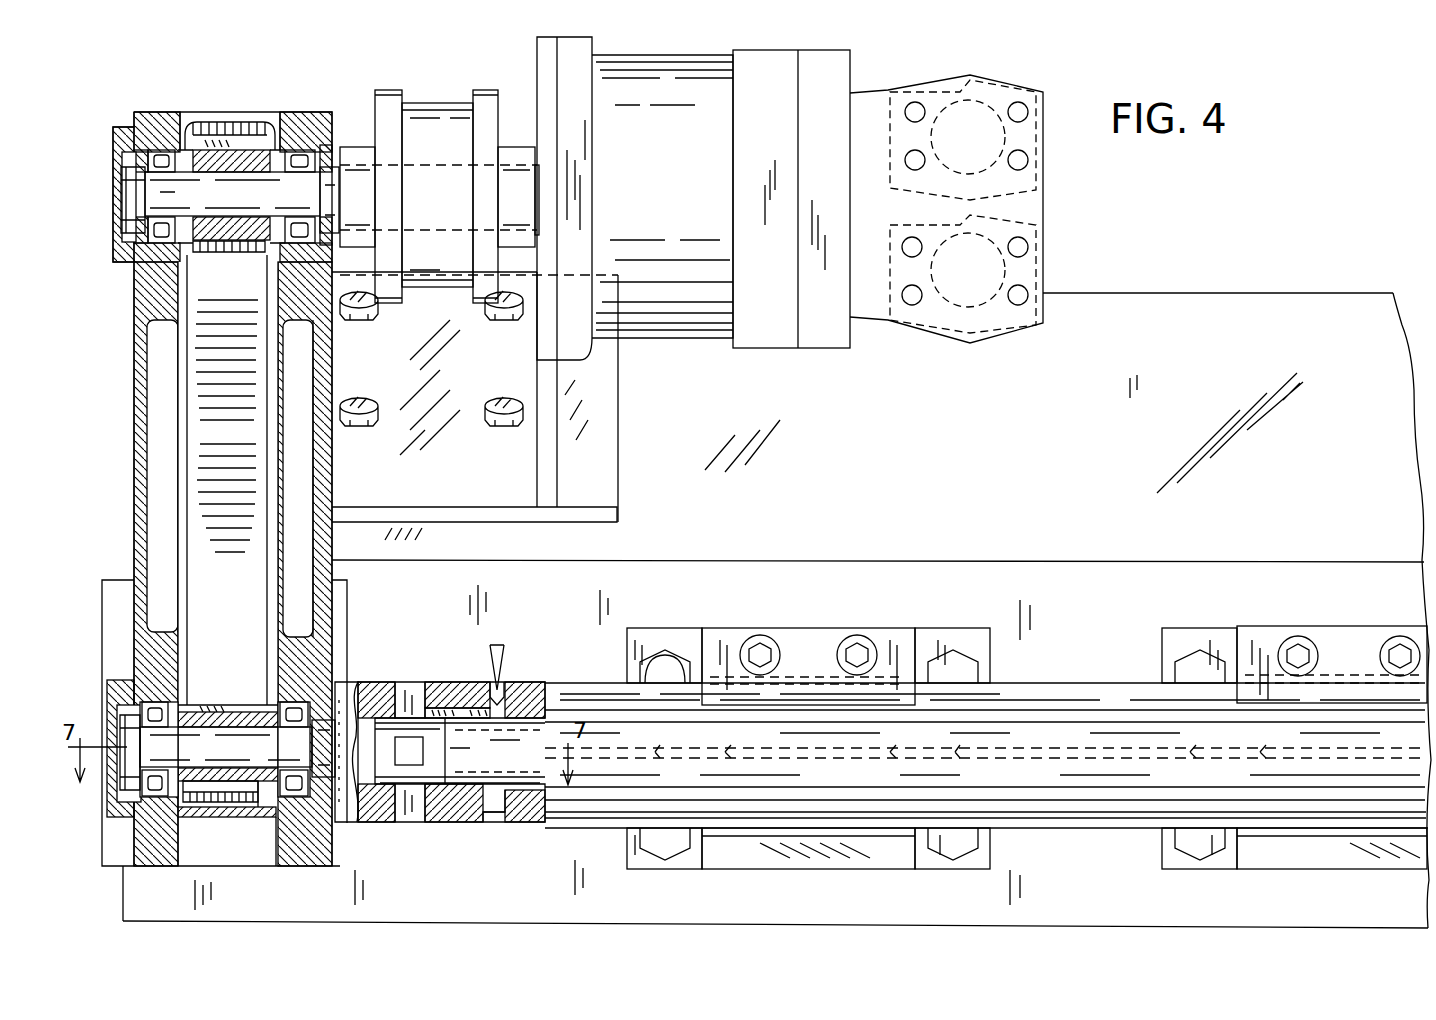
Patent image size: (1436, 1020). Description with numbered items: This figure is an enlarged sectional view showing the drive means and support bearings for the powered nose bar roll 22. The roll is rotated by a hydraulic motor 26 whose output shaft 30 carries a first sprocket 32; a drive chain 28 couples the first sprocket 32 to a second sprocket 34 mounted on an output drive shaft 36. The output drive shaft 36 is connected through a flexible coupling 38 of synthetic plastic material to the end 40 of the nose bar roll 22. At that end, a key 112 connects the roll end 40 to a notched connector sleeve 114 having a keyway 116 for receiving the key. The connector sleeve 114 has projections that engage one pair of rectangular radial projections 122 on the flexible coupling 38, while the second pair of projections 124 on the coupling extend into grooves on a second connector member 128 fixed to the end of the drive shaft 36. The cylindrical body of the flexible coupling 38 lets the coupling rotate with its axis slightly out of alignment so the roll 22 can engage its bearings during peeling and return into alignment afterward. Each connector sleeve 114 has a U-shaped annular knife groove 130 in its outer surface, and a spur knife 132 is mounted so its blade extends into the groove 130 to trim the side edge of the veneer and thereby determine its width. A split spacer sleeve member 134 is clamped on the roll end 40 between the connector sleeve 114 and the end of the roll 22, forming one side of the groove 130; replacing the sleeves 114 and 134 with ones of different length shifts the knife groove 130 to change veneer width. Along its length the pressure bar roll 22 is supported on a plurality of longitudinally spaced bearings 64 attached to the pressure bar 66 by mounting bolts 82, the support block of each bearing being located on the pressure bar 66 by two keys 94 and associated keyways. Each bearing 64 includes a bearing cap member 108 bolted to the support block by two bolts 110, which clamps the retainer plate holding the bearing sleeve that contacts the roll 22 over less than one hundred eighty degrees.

The nose bar roll 22 is at (1058, 695).
The hydraulic motor 26 is at (681, 197).
The drive chain 28 is at (240, 446).
The output shaft 30 is at (232, 200).
The first sprocket 32 is at (232, 165).
The second sprocket 34 is at (240, 715).
The output drive shaft 36 is at (210, 745).
The flexible coupling 38 is at (456, 741).
The roll end 40 is at (518, 718).
The bearing 64 is at (1064, 720).
The pressure bar 66 is at (998, 560).
The mounting bolt 82 is at (662, 660).
The key 94 is at (735, 752).
The bearing cap member 108 is at (825, 663).
The bolt 110 is at (760, 636).
The key 112 is at (485, 725).
The connector sleeve 114 is at (460, 805).
The keyway 116 is at (433, 712).
The projections 122 is at (408, 690).
The projections 124 is at (418, 748).
The second connector member 128 is at (345, 684).
The knife groove 130 is at (490, 822).
The spur knife 132 is at (500, 660).
The spacer sleeve member 134 is at (525, 822).